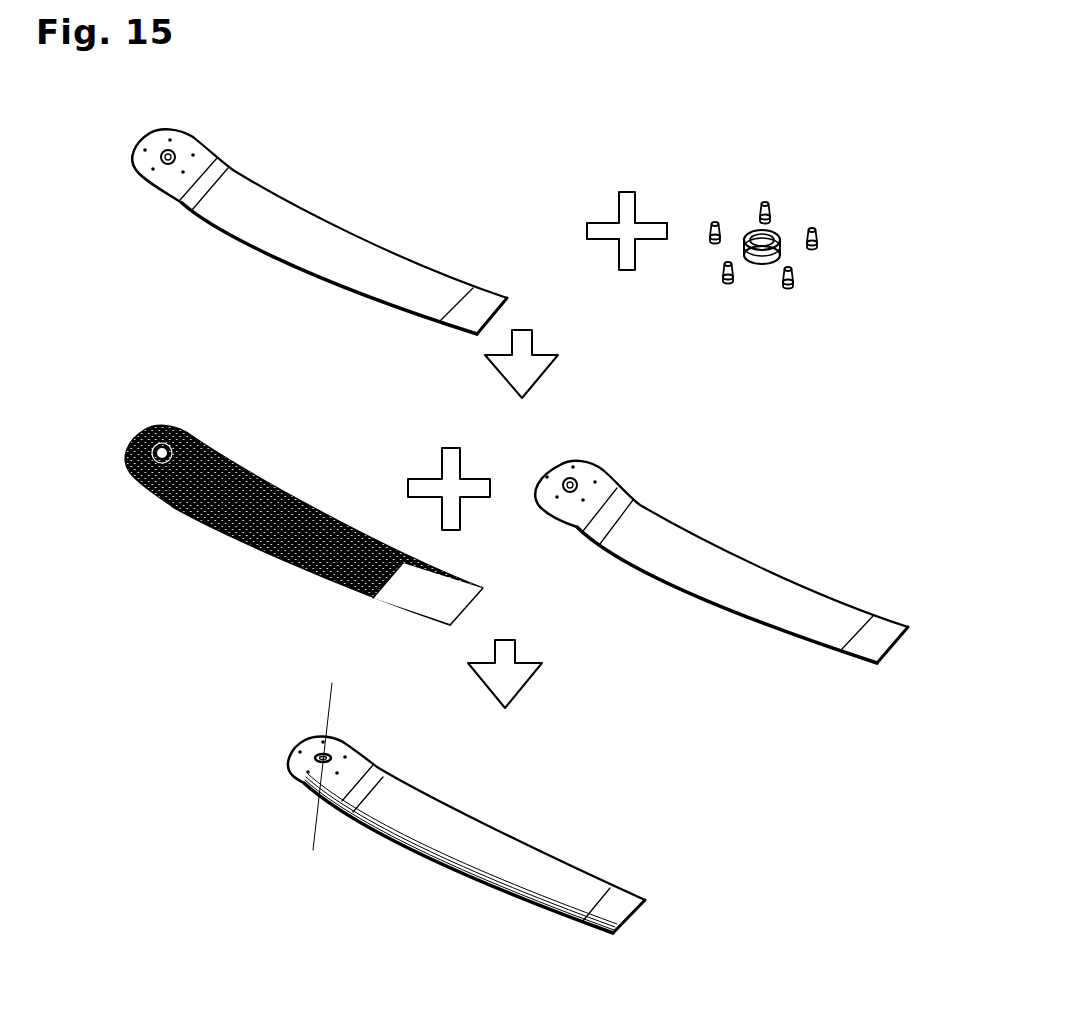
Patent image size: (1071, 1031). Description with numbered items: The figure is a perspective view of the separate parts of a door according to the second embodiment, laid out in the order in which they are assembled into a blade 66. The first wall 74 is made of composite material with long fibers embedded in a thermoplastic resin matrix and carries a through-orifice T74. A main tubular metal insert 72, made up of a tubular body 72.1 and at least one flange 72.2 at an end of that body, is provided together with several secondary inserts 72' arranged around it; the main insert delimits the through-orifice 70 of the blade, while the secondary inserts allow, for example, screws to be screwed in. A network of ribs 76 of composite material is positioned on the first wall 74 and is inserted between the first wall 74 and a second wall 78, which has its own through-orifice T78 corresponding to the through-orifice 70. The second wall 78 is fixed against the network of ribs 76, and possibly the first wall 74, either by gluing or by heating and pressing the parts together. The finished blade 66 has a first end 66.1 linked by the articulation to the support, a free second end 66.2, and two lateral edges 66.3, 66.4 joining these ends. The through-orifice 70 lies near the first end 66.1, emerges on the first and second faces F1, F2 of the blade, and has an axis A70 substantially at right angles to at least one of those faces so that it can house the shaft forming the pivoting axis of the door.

The first wall 74 is at (316, 536).
The through-orifice of the first wall T74 is at (167, 150).
The tubular metal insert 72 is at (517, 473).
The secondary inserts 72' is at (783, 213).
The tubular body 72.1 is at (767, 260).
The flange 72.2 is at (750, 233).
The through-orifice 70 is at (178, 430).
The network of ribs 76 is at (272, 865).
The second wall 78 is at (721, 667).
The through-orifice of the second wall T78 is at (572, 478).
The blade 66 is at (458, 837).
The first end 66.1 is at (287, 748).
The second end 66.2 is at (637, 918).
The lateral edge 66.3 is at (427, 878).
The lateral edge 66.4 is at (495, 833).
The axis of the through-orifice A70 is at (326, 700).
The first face F1 is at (390, 857).
The second face F2 is at (417, 807).